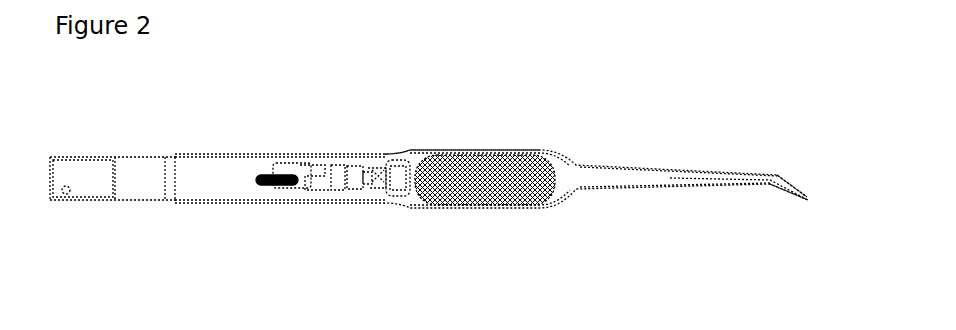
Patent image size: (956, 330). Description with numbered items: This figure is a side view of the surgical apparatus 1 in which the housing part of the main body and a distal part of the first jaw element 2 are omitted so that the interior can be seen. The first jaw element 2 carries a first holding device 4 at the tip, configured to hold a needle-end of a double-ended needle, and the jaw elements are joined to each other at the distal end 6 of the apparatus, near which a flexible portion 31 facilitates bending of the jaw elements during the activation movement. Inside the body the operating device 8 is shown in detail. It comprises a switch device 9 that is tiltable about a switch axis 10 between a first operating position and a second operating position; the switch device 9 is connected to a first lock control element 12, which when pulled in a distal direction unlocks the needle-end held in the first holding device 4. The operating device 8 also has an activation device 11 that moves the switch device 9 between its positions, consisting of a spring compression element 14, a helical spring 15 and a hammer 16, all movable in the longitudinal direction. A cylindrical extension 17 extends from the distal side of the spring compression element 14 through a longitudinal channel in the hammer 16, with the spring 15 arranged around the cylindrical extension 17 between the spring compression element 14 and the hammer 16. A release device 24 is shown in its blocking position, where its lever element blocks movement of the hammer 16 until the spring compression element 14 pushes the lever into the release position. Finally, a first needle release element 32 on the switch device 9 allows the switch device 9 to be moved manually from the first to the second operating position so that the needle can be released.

The surgical apparatus 1 is at (528, 128).
The first jaw element 2 is at (498, 181).
The first holding device 4 is at (805, 206).
The distal end of the apparatus 6 is at (64, 148).
The operating device 8 is at (389, 138).
The switch device 9 is at (290, 177).
The switch axis 10 is at (293, 194).
The activation device 11 is at (348, 200).
The first lock control element 12 is at (391, 181).
The spring compression element 14 is at (394, 173).
The spring 15 is at (375, 184).
The hammer 16 is at (330, 185).
The cylindrical extension 17 is at (366, 182).
The release device 24 is at (367, 181).
The flexible portion 31 is at (142, 186).
The first needle release element 32 is at (272, 177).